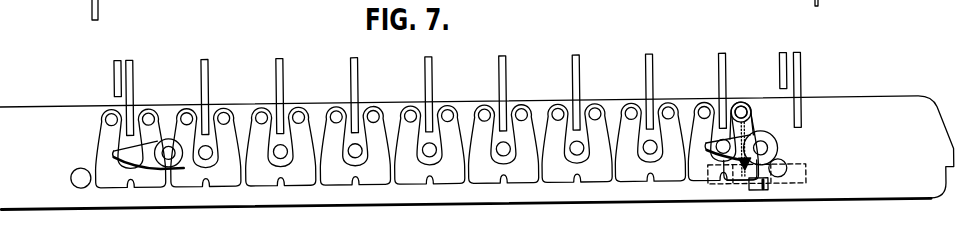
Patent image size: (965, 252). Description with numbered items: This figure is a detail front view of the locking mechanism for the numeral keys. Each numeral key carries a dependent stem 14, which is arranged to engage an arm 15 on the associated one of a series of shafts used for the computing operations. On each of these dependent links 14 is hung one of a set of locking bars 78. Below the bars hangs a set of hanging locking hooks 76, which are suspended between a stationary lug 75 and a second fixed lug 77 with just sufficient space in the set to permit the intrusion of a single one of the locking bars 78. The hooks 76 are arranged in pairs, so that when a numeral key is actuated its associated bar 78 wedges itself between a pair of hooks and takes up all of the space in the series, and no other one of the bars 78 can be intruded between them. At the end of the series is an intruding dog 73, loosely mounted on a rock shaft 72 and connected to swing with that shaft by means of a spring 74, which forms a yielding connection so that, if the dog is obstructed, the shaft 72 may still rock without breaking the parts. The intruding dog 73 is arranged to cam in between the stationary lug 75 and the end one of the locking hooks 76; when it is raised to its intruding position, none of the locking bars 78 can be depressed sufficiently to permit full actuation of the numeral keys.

The dependent stem 14 is at (115, 81).
The locking bar 78 is at (134, 90).
The second fixed lug 77 is at (83, 169).
The spring 74 is at (745, 148).
The stationary lug 75 is at (785, 170).
The rock shaft 72 is at (805, 187).
The intruding dog 73 is at (760, 199).
The hanging locking hook 76 is at (728, 182).
The arm 15 is at (716, 165).